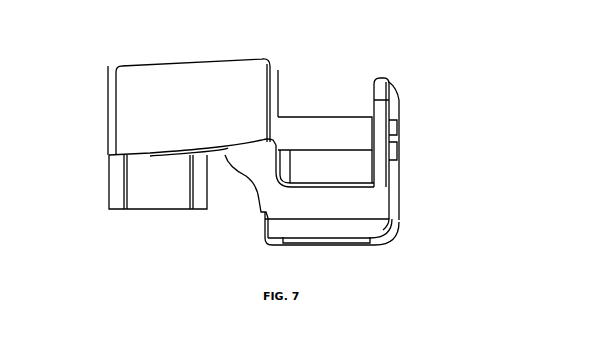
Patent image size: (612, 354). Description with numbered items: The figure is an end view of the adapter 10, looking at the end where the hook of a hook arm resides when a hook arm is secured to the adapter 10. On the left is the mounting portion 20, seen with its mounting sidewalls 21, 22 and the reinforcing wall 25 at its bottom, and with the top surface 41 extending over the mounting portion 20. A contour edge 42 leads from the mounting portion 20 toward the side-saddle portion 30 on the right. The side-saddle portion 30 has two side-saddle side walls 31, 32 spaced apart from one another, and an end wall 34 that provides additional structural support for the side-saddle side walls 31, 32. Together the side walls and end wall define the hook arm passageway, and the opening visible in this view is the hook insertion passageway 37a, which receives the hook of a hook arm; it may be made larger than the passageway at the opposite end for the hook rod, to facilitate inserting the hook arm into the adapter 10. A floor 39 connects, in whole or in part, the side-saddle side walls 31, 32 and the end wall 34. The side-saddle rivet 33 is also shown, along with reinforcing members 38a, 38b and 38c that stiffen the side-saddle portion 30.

The adapter 10 is at (90, 62).
The mounting portion 20 is at (158, 232).
The mounting sidewall 21 is at (113, 175).
The mounting sidewall 22 is at (200, 209).
The reinforcing wall 25 is at (160, 187).
The side-saddle portion 30 is at (325, 72).
The side-saddle side wall 31 is at (386, 78).
The side-saddle side wall 32 is at (283, 75).
The side-saddle rivet 33 is at (330, 132).
The end wall 34 is at (330, 200).
The hook insertion passageway 37a is at (330, 173).
The reinforcing member 38a is at (395, 150).
The reinforcing member 38b is at (395, 125).
The reinforcing member 38c is at (330, 246).
The floor 39 is at (300, 237).
The top surface 41 is at (205, 58).
The contour edge 42 is at (252, 182).